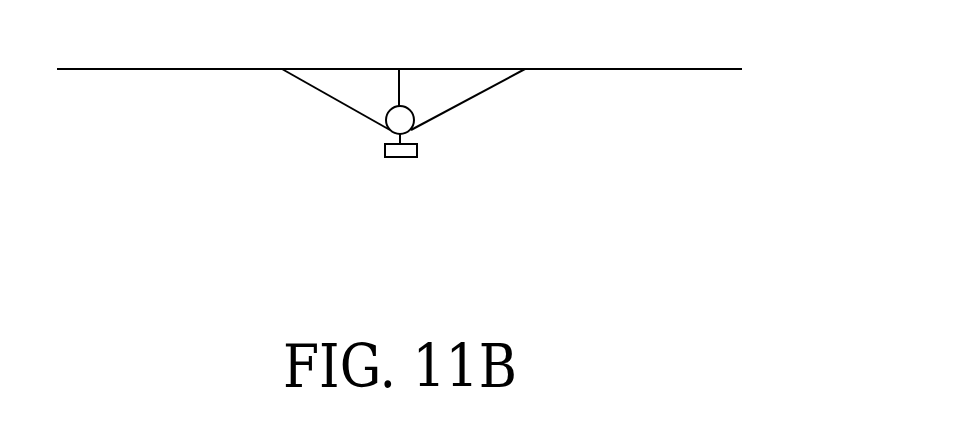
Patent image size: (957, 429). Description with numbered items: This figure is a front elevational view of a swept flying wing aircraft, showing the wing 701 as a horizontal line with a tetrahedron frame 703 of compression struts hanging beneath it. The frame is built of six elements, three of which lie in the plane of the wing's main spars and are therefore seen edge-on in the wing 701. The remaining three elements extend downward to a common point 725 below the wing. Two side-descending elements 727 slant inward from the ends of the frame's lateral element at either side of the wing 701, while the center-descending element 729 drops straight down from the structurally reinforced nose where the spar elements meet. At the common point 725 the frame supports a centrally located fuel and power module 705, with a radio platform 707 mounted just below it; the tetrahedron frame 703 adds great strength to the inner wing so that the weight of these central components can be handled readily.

The wing 701 is at (640, 69).
The tetrahedron frame 703 is at (460, 105).
The fuel and power module 705 is at (395, 118).
The radio platform 707 is at (406, 152).
The common point 725 is at (413, 132).
The side-descending elements 727 is at (326, 96).
The center-descending element 729 is at (401, 88).